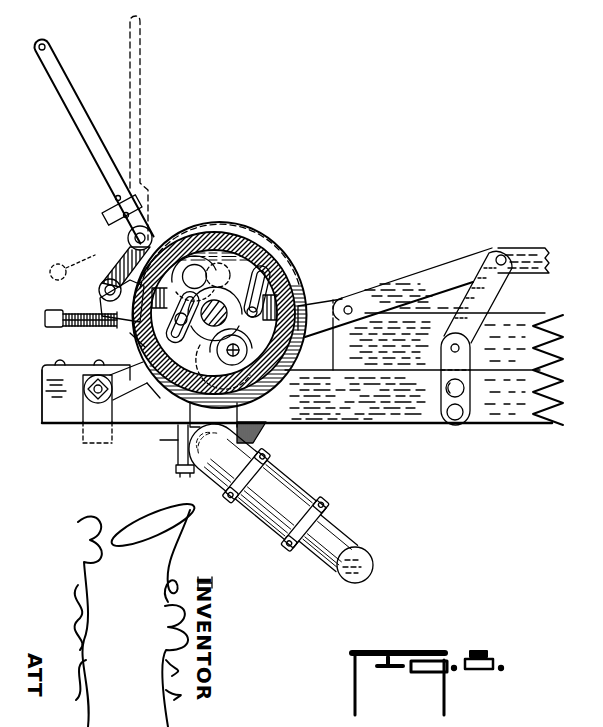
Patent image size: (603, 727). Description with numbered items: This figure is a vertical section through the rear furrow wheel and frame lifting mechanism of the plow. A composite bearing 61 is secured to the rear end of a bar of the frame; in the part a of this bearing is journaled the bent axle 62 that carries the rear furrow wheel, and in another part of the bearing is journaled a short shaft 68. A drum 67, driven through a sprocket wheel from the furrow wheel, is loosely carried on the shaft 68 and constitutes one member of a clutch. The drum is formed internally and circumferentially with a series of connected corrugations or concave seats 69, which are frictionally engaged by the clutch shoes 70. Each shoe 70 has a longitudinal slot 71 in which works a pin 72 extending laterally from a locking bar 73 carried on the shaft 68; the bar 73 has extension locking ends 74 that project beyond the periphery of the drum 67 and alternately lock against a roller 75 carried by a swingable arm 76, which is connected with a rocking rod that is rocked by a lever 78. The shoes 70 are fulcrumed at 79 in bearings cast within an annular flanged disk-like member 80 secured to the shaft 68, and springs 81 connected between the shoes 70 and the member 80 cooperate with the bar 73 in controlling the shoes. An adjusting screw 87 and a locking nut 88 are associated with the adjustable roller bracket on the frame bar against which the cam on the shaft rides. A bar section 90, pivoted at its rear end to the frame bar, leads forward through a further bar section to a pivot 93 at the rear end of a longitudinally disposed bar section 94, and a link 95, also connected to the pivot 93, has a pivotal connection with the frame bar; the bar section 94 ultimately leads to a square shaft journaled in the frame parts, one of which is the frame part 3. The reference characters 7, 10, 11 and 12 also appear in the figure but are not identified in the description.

The frame part 3 is at (521, 326).
The section mark 7 is at (205, 590).
The pivot bracket 10 is at (115, 402).
The bracket arm 11 is at (158, 398).
The base frame 12 is at (119, 405).
The composite bearing 61 is at (198, 443).
The bent axle 62 is at (337, 570).
The drum 67 is at (298, 250).
The short shaft 68 is at (197, 274).
The corrugations or concave seats 69 is at (183, 398).
The clutch shoes 70 is at (295, 268).
The longitudinal slot 71 is at (297, 289).
The pin 72 is at (299, 302).
The locking bar 73 is at (242, 266).
The extension locking ends 74 is at (99, 307).
The roller 75 is at (103, 279).
The swingable arm 76 is at (128, 241).
The lever 78 is at (53, 63).
The fulcrum 79 is at (215, 301).
The annular flanged disk-like member 80 is at (205, 228).
The springs 81 is at (131, 334).
The adjusting screw 87 is at (54, 326).
The locking nut 88 is at (90, 332).
The bar section 90 is at (398, 292).
The pivotal connection 93 is at (502, 258).
The longitudinally disposed bar section 94 is at (538, 247).
The link 95 is at (493, 293).
The part of bearing a is at (152, 468).